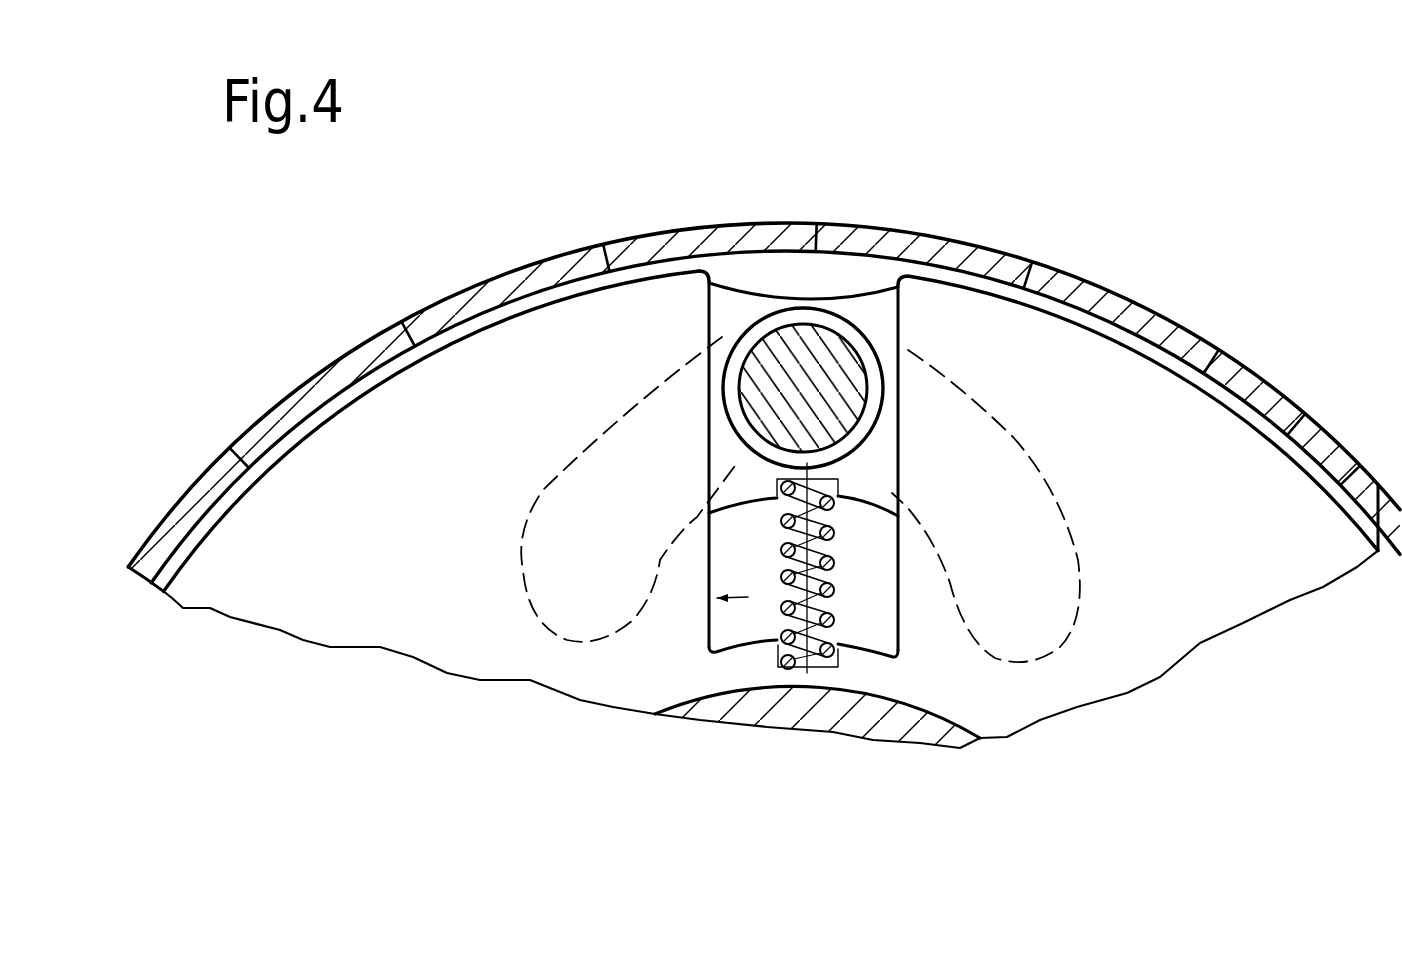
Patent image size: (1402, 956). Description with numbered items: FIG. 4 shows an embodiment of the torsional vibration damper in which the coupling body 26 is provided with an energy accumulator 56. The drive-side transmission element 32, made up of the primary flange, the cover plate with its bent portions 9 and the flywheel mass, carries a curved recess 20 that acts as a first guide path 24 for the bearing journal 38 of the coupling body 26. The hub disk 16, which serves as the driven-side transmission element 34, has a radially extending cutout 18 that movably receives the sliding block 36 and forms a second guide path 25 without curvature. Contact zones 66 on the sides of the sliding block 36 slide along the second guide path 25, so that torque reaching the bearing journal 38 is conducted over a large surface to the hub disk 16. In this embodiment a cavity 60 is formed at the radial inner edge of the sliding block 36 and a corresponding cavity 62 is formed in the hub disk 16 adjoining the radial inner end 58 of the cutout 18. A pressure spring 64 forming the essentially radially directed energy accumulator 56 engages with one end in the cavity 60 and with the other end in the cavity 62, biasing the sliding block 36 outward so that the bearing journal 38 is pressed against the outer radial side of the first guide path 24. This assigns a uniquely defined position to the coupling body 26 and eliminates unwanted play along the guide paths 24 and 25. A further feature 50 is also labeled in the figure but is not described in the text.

The bent portions 9 is at (1384, 492).
The hub disk 16 is at (467, 363).
The cutout 18 is at (860, 570).
The recess 20 is at (960, 470).
The first guide path 24 is at (962, 370).
The second guide path 25 is at (893, 612).
The coupling body 26 is at (763, 417).
The drive-side transmission element 32 is at (623, 236).
The driven-side transmission element 34 is at (383, 410).
The sliding block 36 is at (755, 450).
The bearing journal 38 is at (740, 540).
The arcuate seat 50 is at (775, 298).
The energy accumulator 56 is at (722, 625).
The radial inner end 58 is at (763, 645).
The cavity 60 is at (896, 658).
The cavity 62 is at (768, 658).
The pressure spring 64 is at (775, 535).
The contact zones 66 is at (708, 325).